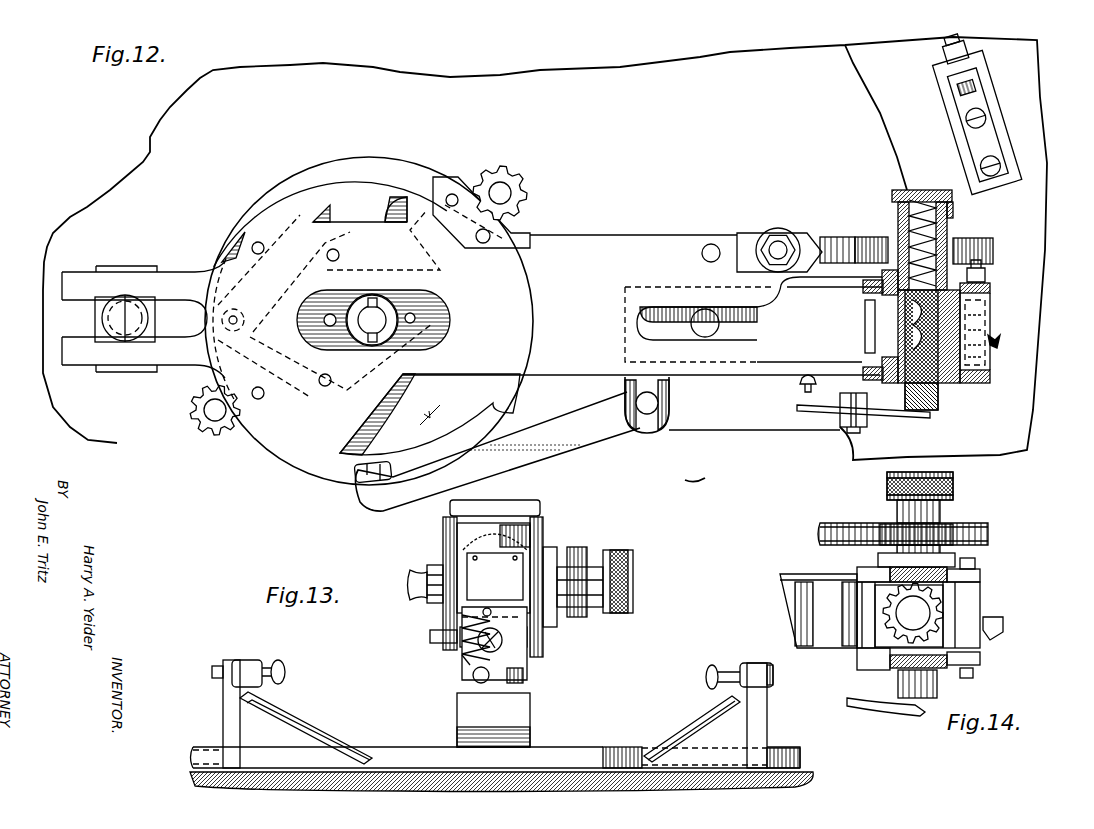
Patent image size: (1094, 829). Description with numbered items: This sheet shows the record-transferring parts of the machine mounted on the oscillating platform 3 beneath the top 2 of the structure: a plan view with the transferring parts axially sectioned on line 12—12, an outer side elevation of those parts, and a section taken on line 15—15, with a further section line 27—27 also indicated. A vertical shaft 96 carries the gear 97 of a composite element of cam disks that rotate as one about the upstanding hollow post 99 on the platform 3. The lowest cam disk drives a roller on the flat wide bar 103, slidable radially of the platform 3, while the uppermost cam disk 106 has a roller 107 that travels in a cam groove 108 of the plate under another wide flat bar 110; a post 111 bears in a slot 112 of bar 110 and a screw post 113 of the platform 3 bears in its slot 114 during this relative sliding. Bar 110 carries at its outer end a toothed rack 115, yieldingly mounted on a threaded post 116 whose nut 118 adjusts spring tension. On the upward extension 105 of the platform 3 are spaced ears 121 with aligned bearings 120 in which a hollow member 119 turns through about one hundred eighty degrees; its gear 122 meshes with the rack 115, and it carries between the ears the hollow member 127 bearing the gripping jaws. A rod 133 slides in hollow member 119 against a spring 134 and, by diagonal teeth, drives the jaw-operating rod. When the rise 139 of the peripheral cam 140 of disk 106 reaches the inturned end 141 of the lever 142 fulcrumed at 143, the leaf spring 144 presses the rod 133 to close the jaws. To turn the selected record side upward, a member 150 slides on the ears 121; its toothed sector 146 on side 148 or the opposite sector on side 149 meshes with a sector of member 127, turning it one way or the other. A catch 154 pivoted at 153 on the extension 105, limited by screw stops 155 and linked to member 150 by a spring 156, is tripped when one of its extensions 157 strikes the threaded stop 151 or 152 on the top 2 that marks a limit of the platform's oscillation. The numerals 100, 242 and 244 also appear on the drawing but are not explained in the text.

In FIG. 12, the top of the structure 2 is at (914, 121).
In FIG. 13, the top of the structure 2 is at (815, 775).
In FIG. 12, the platform 3 is at (545, 259).
In FIG. 13, the platform 3 is at (585, 752).
In FIG. 13, the section line 12— 12 is at (387, 592).
In FIG. 12, the section line 15— 15 is at (863, 327).
In FIG. 13, the section line 15— 15 is at (485, 488).
In FIG. 14, the section line 15— 15 is at (830, 593).
In FIG. 12, the section line 27— 27 is at (943, 173).
In FIG. 12, the vertical shaft 96 is at (500, 193).
In FIG. 12, the gear 97 is at (524, 194).
In FIG. 12, the hollow post 99 is at (398, 326).
In FIG. 12, the screws 100 is at (332, 327).
In FIG. 12, the flat wide bar 103 is at (759, 319).
In FIG. 14, the flat wide bar 103 is at (818, 611).
In FIG. 13, the upward extension of platform 105 is at (493, 720).
In FIG. 12, the uppermost cam disk 106 is at (369, 321).
In FIG. 12, the roller 107 is at (247, 320).
In FIG. 12, the cam groove 108 is at (405, 236).
In FIG. 12, the wide flat bar 110 is at (641, 305).
In FIG. 12, the post 111 is at (705, 330).
In FIG. 12, the slot 112 is at (650, 338).
In FIG. 12, the screw post 113 is at (108, 318).
In FIG. 12, the slot 114 is at (195, 338).
In FIG. 12, the toothed rack 115 is at (985, 240).
In FIG. 14, the toothed rack 115 is at (845, 523).
In FIG. 12, the threaded post 116 is at (786, 238).
In FIG. 12, the nut 118 is at (765, 240).
In FIG. 12, the hollow member 119 is at (898, 226).
In FIG. 13, the hollow member 119 is at (592, 607).
In FIG. 14, the hollow member 119 is at (940, 513).
In FIG. 12, the bearings 120 is at (880, 274).
In FIG. 12, the ears 121 is at (983, 272).
In FIG. 13, the ears 121 is at (552, 547).
In FIG. 14, the ears 121 is at (883, 562).
In FIG. 12, the gear 122 is at (898, 240).
In FIG. 13, the gear 122 is at (585, 548).
In FIG. 14, the gear 122 is at (955, 532).
In FIG. 13, the hollow member 127 is at (540, 514).
In FIG. 14, the hollow member 127 is at (937, 608).
In FIG. 12, the rod 133 is at (940, 412).
In FIG. 13, the rod 133 is at (412, 598).
In FIG. 14, the rod 133 is at (930, 688).
In FIG. 12, the spring 134 is at (953, 212).
In FIG. 12, the rise 139 is at (508, 410).
In FIG. 12, the peripheral cam 140 is at (520, 388).
In FIG. 12, the inturned end of lever 141 is at (377, 480).
In FIG. 12, the lever 142 is at (497, 451).
In FIG. 12, the fulcrum 143 is at (647, 410).
In FIG. 12, the leaf spring 144 is at (870, 410).
In FIG. 13, the leaf spring 144 is at (440, 600).
In FIG. 14, the toothed sector 146 is at (858, 571).
In FIG. 12, the side of member 148 is at (990, 288).
In FIG. 14, the side of member 148 is at (980, 574).
In FIG. 12, the side of member 149 is at (988, 382).
In FIG. 14, the side of member 149 is at (973, 668).
In FIG. 12, the member 150 is at (988, 302).
In FIG. 13, the member 150 is at (430, 636).
In FIG. 14, the member 150 is at (968, 640).
In FIG. 12, the threaded stop 151 is at (988, 96).
In FIG. 13, the threaded stop 151 is at (706, 678).
In FIG. 13, the threaded stop 152 is at (285, 676).
In FIG. 13, the pivot 153 is at (500, 650).
In FIG. 13, the catch 154 is at (505, 660).
In FIG. 13, the screw stops 155 is at (460, 640).
In FIG. 12, the spring 156 is at (996, 348).
In FIG. 13, the spring 156 is at (475, 650).
In FIG. 14, the spring 156 is at (994, 615).
In FIG. 13, the catch extensions 157 is at (470, 650).
In FIG. 12, the gear 242 is at (205, 413).
In FIG. 12, the gear shaft 244 is at (232, 435).